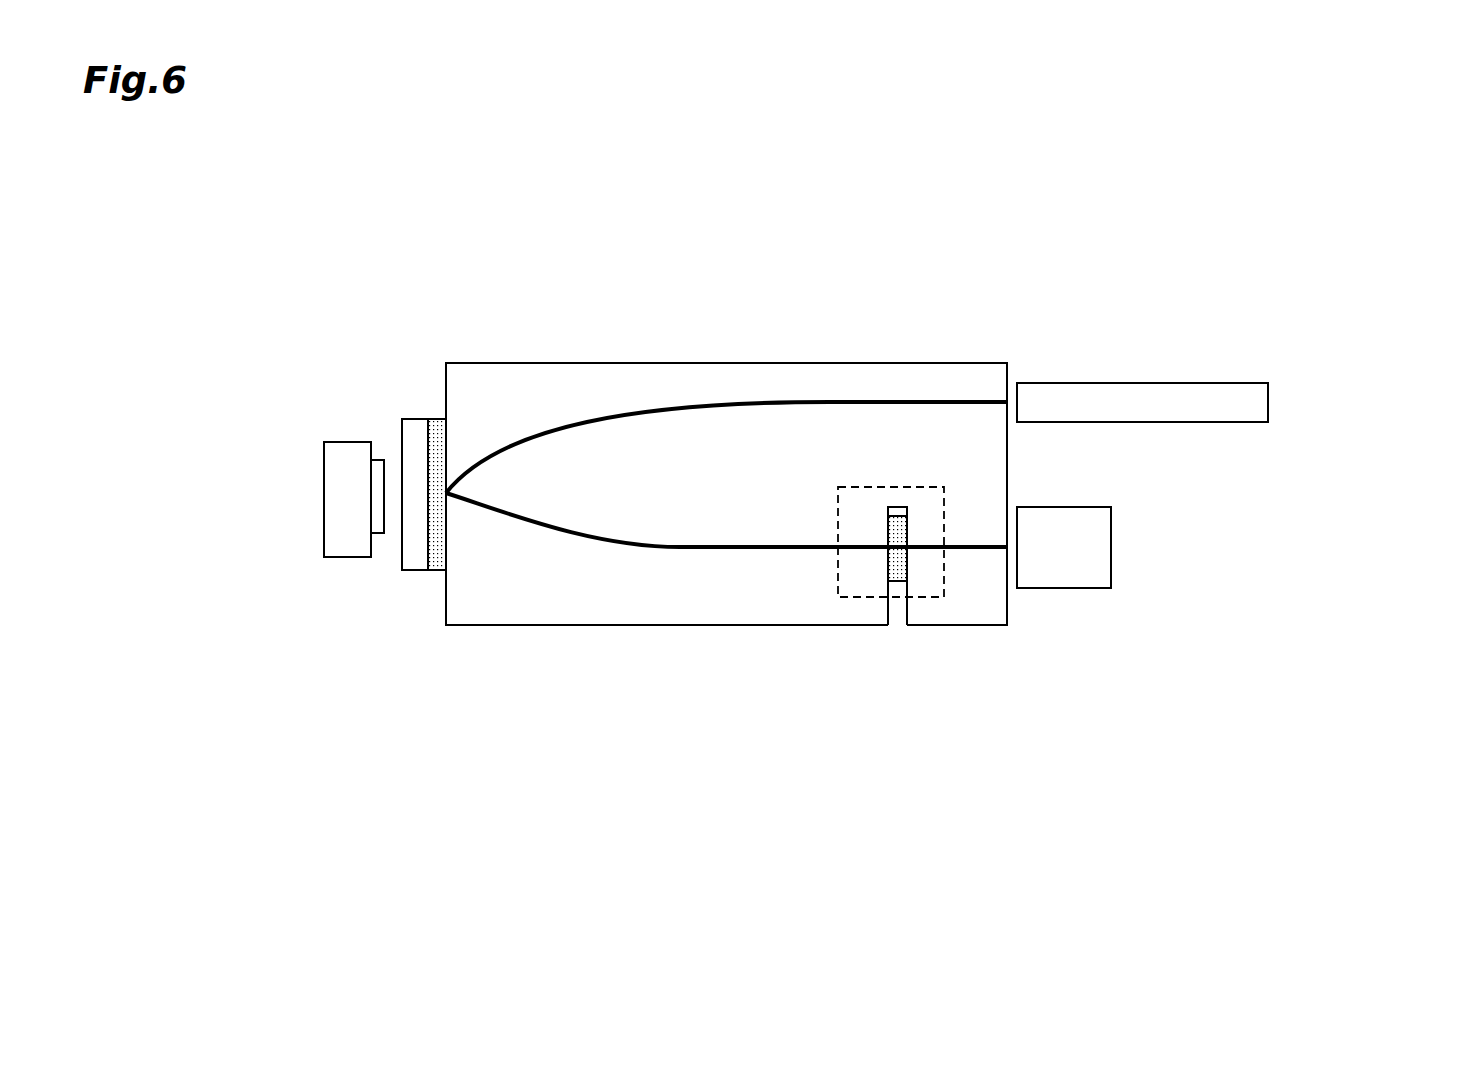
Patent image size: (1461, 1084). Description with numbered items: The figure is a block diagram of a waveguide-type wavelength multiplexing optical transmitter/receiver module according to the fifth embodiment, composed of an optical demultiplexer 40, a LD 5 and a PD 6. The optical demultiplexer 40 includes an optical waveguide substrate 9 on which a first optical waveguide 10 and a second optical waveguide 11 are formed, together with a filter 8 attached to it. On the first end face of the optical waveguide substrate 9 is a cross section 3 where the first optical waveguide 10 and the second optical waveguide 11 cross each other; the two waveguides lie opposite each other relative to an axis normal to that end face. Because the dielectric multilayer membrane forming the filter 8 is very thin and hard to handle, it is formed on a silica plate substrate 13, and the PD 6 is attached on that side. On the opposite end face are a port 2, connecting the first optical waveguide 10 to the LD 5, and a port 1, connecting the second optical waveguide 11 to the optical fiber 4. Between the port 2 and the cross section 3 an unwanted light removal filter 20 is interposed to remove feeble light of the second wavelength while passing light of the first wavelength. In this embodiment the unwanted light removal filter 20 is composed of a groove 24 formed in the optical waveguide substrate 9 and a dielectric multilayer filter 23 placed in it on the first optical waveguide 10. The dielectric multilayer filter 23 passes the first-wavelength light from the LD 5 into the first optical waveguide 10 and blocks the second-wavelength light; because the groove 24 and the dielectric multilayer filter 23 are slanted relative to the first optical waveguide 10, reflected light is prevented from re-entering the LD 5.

The port 1 is at (965, 402).
The port 2 is at (980, 547).
The cross section 3 is at (447, 492).
The optical fiber 4 is at (1193, 383).
The LD 5 is at (1111, 577).
The PD 6 is at (347, 542).
The filter 8 is at (437, 419).
The optical waveguide substrate 9 is at (592, 625).
The first optical waveguide 10 is at (682, 547).
The second optical waveguide 11 is at (833, 402).
The silica plate substrate 13 is at (412, 419).
The unwanted light removal filter 20 is at (944, 513).
The dielectric multilayer filter 23 is at (898, 581).
The groove 24 is at (900, 603).
The optical demultiplexer 40 is at (657, 645).